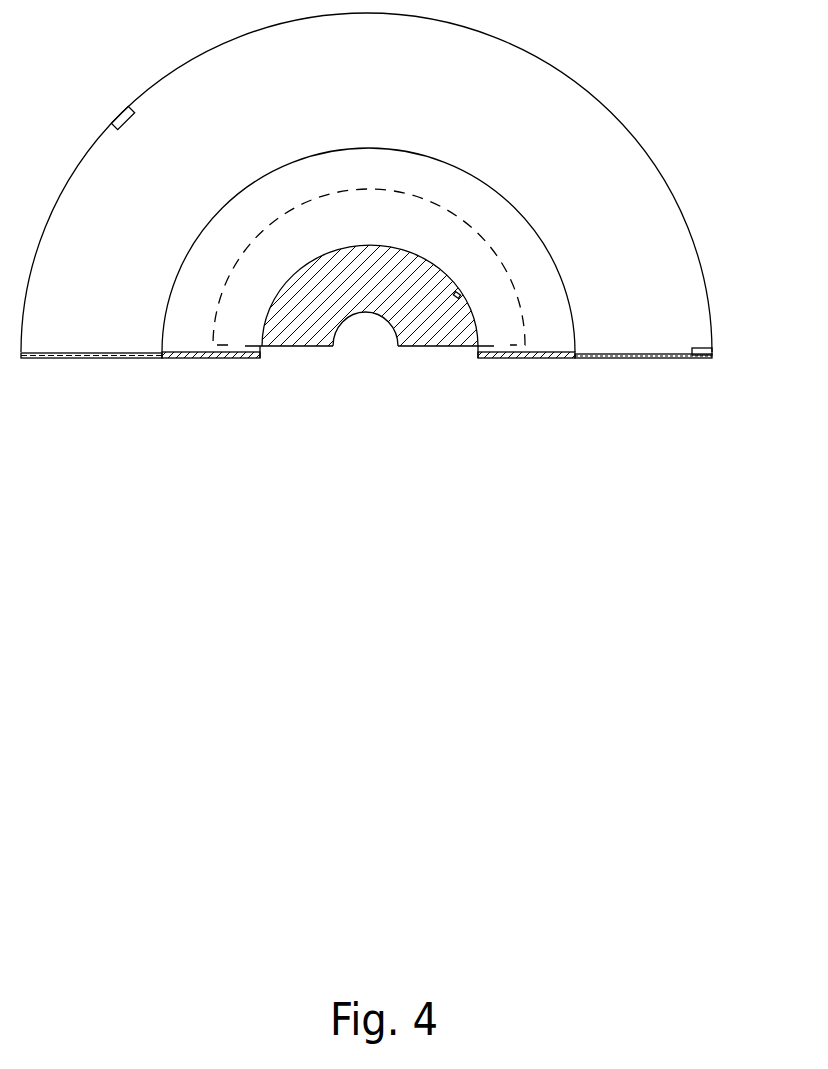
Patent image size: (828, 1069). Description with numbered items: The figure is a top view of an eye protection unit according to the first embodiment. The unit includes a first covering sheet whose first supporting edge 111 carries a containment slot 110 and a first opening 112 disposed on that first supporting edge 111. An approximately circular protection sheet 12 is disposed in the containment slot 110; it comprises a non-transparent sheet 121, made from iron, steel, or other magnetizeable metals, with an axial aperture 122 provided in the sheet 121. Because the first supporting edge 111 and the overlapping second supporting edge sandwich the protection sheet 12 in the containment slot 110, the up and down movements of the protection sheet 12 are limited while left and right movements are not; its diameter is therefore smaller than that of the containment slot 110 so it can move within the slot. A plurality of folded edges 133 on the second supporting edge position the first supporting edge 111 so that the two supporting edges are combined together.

The protection sheet 12 is at (380, 345).
The containment slot 110 is at (542, 342).
The first supporting edge 111 is at (635, 342).
The first opening 112 is at (460, 298).
The non-transparent sheet 121 is at (430, 333).
The axial aperture 122 is at (392, 331).
The folded edges 133 is at (125, 112).